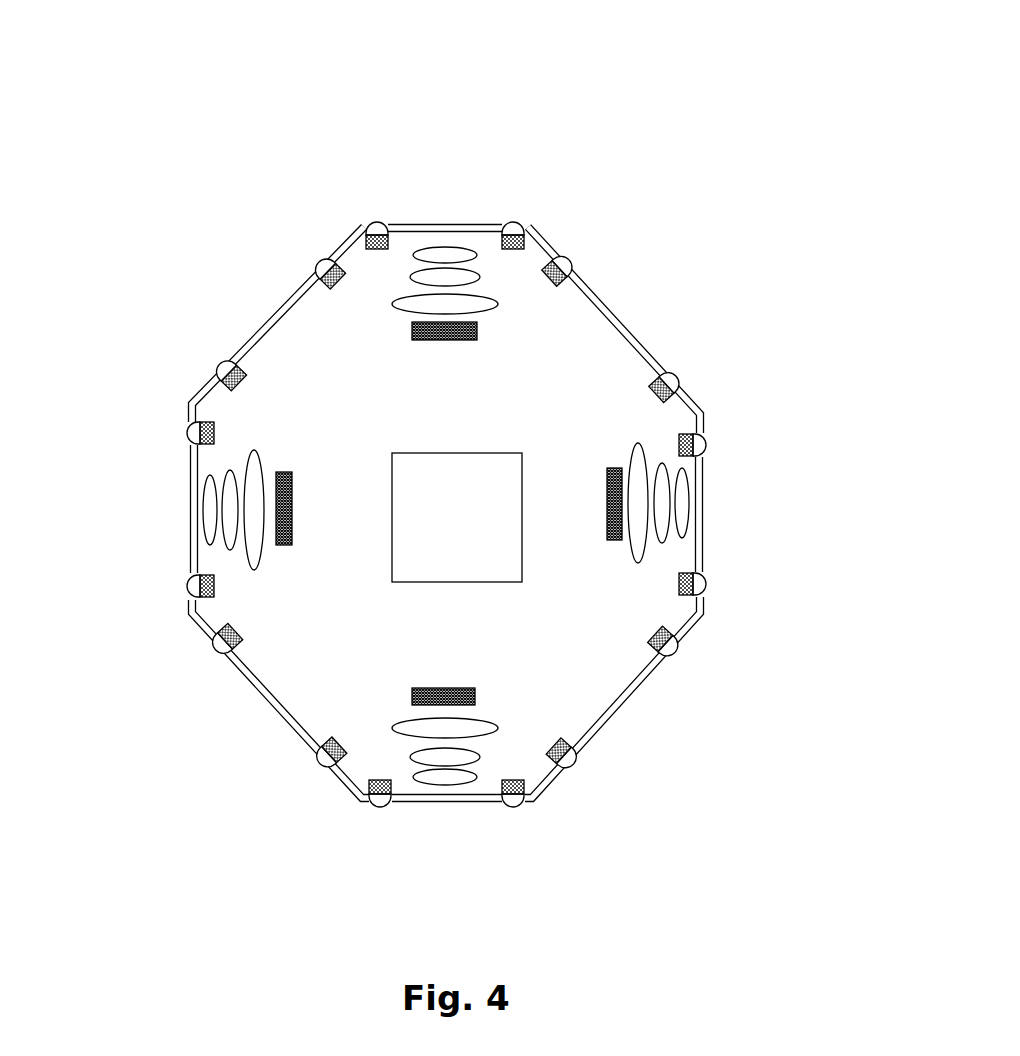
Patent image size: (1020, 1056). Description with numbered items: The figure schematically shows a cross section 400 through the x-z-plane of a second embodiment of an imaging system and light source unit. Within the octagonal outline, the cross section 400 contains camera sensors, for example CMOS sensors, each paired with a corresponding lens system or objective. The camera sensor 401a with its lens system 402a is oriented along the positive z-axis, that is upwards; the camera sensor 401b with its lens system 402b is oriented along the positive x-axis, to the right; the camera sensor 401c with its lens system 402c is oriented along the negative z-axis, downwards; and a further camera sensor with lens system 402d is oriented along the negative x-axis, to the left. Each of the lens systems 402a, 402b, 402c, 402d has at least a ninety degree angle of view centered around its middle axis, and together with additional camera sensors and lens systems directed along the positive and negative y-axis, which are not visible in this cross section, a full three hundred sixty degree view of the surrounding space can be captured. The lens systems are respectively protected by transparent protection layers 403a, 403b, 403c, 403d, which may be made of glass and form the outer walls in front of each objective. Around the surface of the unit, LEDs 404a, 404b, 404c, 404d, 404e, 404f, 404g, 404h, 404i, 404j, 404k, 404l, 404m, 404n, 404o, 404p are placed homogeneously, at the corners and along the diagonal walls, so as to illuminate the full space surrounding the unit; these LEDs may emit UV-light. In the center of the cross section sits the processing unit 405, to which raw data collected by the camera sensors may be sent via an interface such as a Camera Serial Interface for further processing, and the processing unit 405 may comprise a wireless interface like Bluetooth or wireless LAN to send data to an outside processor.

The cross section 400 is at (520, 63).
The camera sensor 401a is at (427, 342).
The camera sensor 401b is at (613, 543).
The camera sensor 401c is at (292, 546).
The lens system 402a is at (393, 320).
The lens system 402b is at (622, 447).
The lens system 402c is at (490, 708).
The lens system 402d is at (260, 433).
The transparent protection layer 403a is at (480, 225).
The transparent protection layer 403b is at (705, 512).
The transparent protection layer 403c is at (457, 803).
The transparent protection layer 403d is at (190, 520).
The LED 404a is at (368, 222).
The LED 404b is at (516, 222).
The LED 404c is at (582, 260).
The LED 404d is at (685, 377).
The LED 404e is at (708, 445).
The LED 404f is at (706, 584).
The LED 404g is at (682, 652).
The LED 404h is at (572, 766).
The LED 404i is at (518, 806).
The LED 404j is at (378, 810).
The LED 404k is at (320, 762).
The LED 404l is at (212, 648).
The LED 404m is at (188, 584).
The LED 404n is at (187, 432).
The LED 404o is at (214, 357).
The LED 404p is at (312, 256).
The processing unit 405 is at (457, 517).